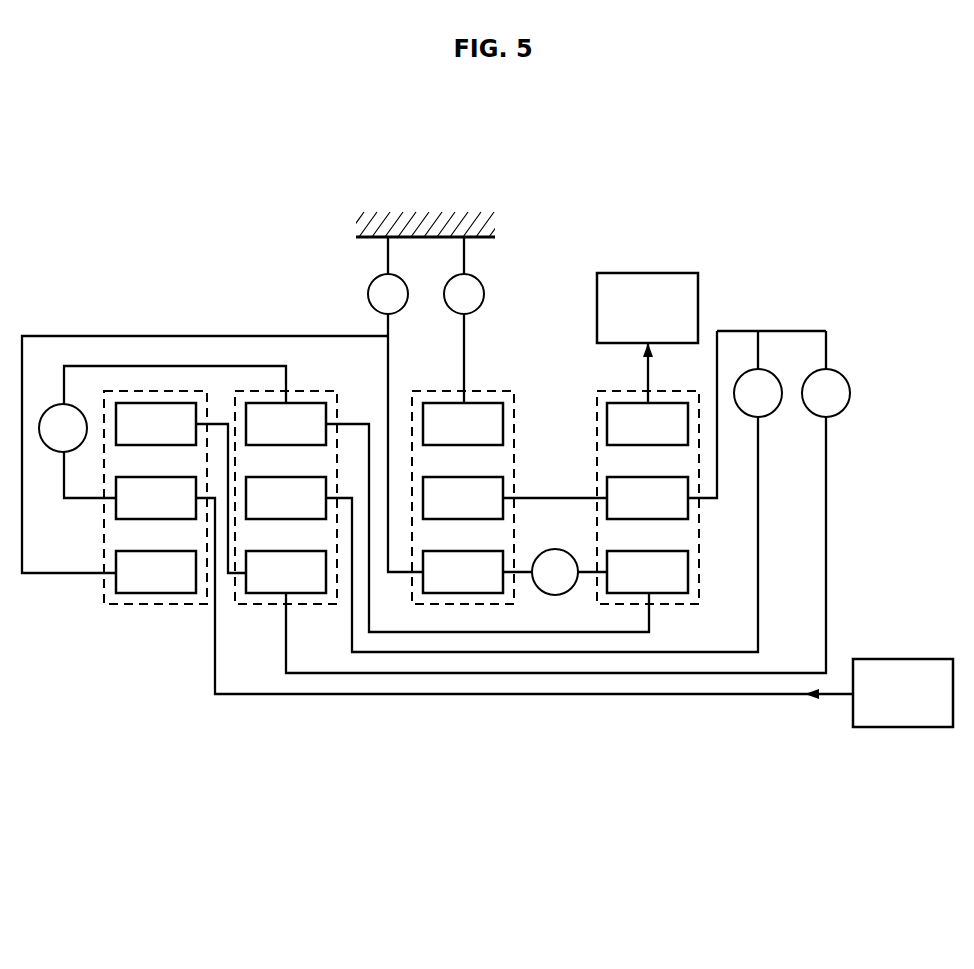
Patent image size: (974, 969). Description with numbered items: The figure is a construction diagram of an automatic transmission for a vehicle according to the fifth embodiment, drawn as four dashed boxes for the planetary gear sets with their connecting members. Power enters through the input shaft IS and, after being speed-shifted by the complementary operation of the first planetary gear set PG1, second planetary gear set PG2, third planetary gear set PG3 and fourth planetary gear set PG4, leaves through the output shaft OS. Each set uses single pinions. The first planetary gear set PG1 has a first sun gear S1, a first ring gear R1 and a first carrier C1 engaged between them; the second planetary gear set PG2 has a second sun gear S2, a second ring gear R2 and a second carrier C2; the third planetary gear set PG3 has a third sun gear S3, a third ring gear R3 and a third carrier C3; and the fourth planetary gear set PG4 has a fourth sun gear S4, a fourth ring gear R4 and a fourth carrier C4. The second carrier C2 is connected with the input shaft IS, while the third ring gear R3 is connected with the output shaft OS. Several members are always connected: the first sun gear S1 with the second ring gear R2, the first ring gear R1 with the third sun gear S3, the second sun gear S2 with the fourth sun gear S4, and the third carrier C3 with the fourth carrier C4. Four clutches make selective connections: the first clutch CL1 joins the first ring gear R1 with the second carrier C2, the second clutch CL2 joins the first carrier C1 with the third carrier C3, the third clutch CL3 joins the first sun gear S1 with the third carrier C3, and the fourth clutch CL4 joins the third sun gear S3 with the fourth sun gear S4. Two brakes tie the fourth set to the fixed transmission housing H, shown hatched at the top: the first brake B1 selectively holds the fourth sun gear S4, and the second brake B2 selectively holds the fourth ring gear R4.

The transmission housing H is at (428, 223).
The first brake B1 is at (388, 294).
The second brake B2 is at (464, 294).
The first clutch CL1 is at (63, 428).
The second clutch CL2 is at (758, 393).
The third clutch CL3 is at (826, 393).
The fourth clutch CL4 is at (555, 572).
The first planetary gear set PG1 is at (286, 584).
The second planetary gear set PG2 is at (155, 584).
The third planetary gear set PG3 is at (648, 584).
The fourth planetary gear set PG4 is at (463, 584).
The first ring gear R1 is at (286, 424).
The first carrier C1 is at (286, 498).
The first sun gear S1 is at (286, 572).
The second ring gear R2 is at (156, 424).
The second carrier C2 is at (156, 498).
The second sun gear S2 is at (156, 572).
The third ring gear R3 is at (647, 424).
The third carrier C3 is at (647, 498).
The third sun gear S3 is at (647, 572).
The fourth ring gear R4 is at (463, 424).
The fourth carrier C4 is at (463, 498).
The fourth sun gear S4 is at (463, 572).
The output shaft OS is at (645, 272).
The input shaft IS is at (901, 728).